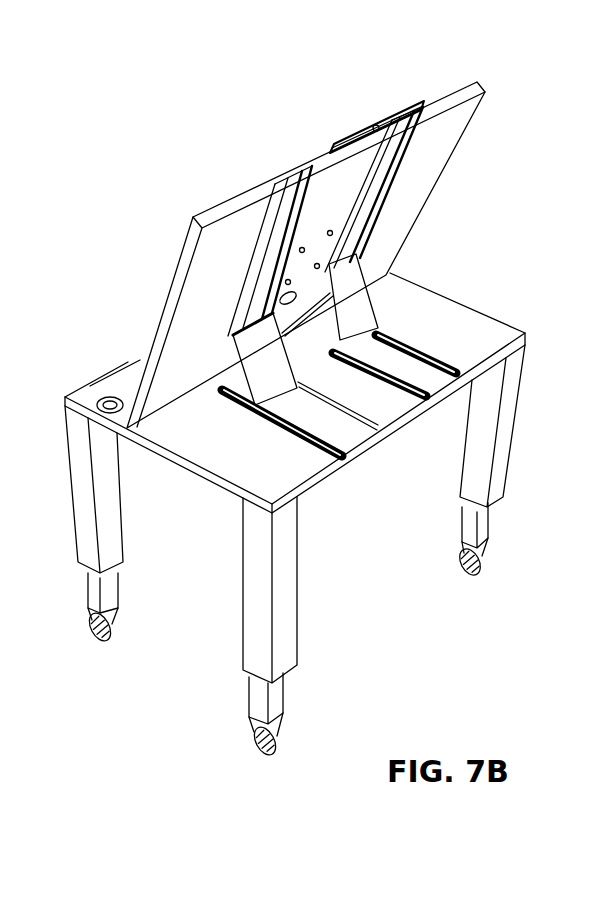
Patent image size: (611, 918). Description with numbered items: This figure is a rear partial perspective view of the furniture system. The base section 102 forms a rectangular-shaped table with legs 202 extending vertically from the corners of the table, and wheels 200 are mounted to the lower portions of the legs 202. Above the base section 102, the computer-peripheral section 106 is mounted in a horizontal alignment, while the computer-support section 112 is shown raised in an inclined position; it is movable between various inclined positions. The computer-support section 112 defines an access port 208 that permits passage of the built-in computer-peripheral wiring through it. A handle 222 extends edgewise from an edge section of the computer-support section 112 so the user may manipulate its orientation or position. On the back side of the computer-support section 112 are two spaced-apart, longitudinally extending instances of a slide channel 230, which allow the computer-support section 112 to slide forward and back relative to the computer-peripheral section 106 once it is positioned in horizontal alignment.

The base section 102 is at (297, 584).
The computer-peripheral section 106 is at (117, 365).
The computer-support section 112 is at (223, 198).
The wheels 200 is at (100, 641).
The legs 202 is at (78, 476).
The access port 208 is at (300, 300).
The handle 222 is at (352, 127).
The slide channel 230 is at (292, 187).